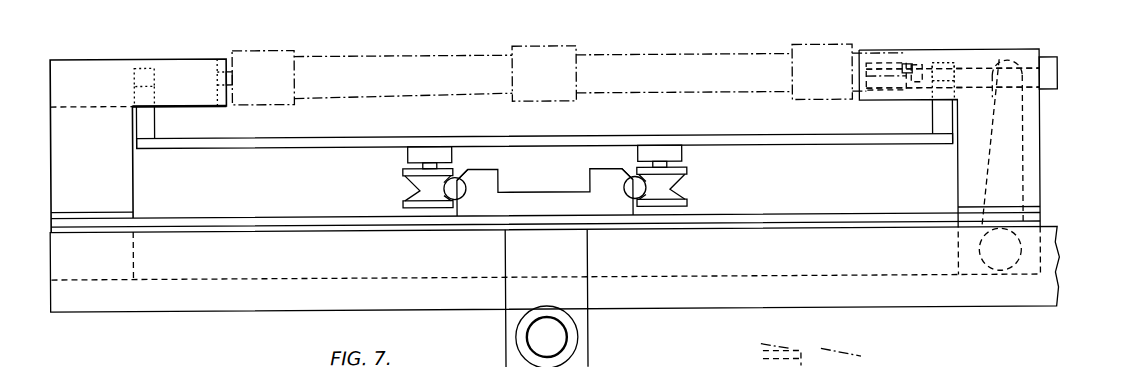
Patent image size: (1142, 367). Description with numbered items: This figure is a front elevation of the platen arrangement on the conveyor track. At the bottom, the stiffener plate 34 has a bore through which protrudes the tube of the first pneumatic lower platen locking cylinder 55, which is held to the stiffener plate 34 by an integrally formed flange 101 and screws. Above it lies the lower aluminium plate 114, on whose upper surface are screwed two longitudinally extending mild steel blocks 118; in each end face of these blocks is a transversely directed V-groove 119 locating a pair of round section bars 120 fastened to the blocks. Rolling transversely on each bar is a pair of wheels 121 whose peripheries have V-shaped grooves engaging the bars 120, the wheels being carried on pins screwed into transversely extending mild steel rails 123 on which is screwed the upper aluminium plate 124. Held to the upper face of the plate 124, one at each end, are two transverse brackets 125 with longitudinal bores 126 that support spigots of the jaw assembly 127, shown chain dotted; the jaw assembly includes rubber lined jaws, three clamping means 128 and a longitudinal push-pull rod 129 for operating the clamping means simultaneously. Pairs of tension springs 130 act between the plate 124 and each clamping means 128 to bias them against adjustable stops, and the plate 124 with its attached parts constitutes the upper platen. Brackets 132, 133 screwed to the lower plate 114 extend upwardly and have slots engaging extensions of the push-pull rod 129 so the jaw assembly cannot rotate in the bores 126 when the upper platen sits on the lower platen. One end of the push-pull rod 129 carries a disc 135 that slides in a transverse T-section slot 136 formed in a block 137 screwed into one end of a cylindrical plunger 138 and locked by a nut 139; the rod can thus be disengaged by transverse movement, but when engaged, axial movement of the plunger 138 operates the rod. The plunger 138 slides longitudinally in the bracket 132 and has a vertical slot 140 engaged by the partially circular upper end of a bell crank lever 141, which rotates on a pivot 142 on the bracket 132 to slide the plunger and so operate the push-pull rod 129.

The stiffener plate 34 is at (245, 300).
The first pneumatic lower platen locking cylinder 55 is at (535, 340).
The flange 101 is at (573, 338).
The aluminium plate 114 is at (820, 222).
The mild steel blocks 118 is at (530, 193).
The V-groove 119 is at (462, 186).
The bars 120 is at (453, 193).
The wheels 121 is at (410, 173).
The rails 123 is at (415, 153).
The aluminium plate 124 is at (618, 141).
The brackets 125 is at (150, 121).
The bores 126 is at (137, 79).
The jaw assembly 127 is at (405, 79).
The clamping means 128 is at (283, 95).
The push-pull rod 129 is at (232, 83).
The tension springs 130 is at (593, 341).
The bracket 132 is at (1040, 166).
The bracket 133 is at (118, 181).
The disc 135 is at (900, 64).
The T-section slot 136 is at (905, 84).
The block 137 is at (912, 67).
The plunger 138 is at (1040, 91).
The nut 139 is at (925, 83).
The slot 140 is at (1058, 75).
The bell crank lever 141 is at (1020, 141).
The pivot 142 is at (1015, 243).